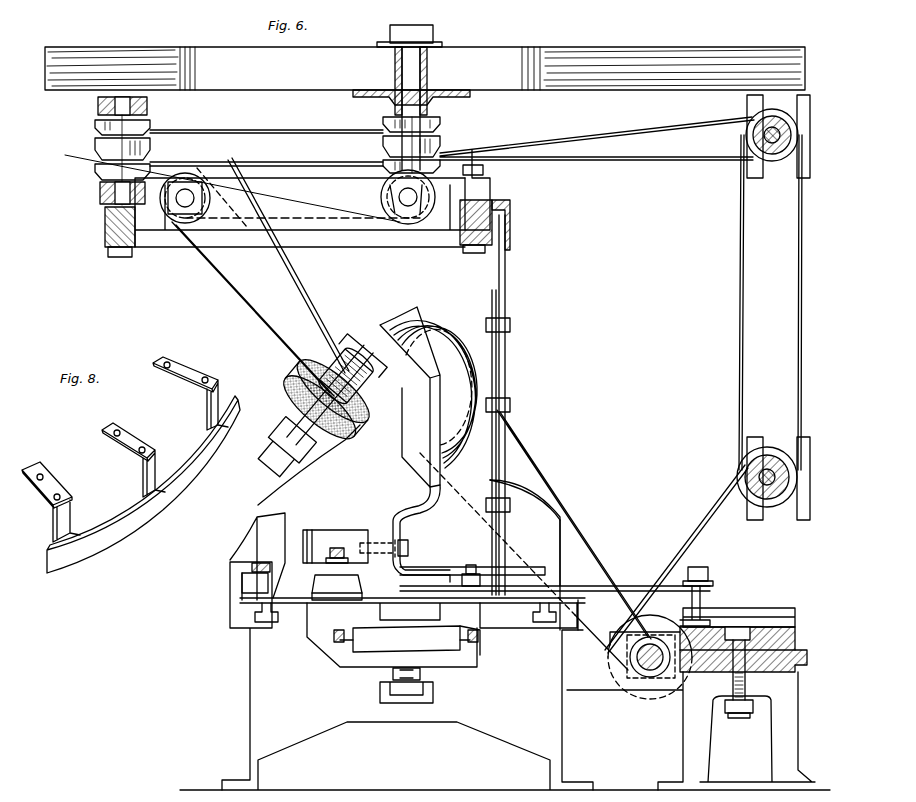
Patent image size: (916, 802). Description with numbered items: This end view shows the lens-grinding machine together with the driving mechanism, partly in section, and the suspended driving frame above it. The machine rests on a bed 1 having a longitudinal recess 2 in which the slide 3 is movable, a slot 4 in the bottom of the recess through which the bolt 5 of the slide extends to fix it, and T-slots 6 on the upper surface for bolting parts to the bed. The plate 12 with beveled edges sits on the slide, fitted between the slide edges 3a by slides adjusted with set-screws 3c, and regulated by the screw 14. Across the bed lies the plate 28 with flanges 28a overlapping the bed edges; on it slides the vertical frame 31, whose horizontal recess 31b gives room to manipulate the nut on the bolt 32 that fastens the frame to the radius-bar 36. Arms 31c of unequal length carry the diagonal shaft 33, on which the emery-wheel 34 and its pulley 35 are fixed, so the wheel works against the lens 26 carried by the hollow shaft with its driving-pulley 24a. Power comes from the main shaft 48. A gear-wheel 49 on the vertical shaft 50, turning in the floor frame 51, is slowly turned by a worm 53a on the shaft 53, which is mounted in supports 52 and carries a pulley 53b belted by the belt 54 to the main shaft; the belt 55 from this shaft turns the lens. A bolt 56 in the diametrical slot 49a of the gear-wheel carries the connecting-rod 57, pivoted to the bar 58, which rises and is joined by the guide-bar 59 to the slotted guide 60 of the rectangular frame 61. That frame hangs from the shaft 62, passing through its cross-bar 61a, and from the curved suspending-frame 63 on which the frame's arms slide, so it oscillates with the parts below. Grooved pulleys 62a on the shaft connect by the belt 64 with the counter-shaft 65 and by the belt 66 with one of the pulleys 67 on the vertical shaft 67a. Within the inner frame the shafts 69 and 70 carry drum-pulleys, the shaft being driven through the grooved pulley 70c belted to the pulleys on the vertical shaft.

In FIG. 6, the bed 1 is at (505, 713).
In FIG. 6, the longitudinal recess 2 is at (330, 645).
In FIG. 6, the slide 3 is at (473, 640).
In FIG. 6, the clamp jaw 3a is at (405, 639).
In FIG. 6, the set-screws 3c is at (343, 630).
In FIG. 6, the slot 4 is at (420, 674).
In FIG. 6, the bolt 5 is at (403, 700).
In FIG. 6, the T-slot 6 is at (265, 622).
In FIG. 6, the plate 12 is at (406, 639).
In FIG. 6, the screw 14 is at (412, 609).
In FIG. 6, the driving-pulley 24a is at (470, 366).
In FIG. 6, the lens 26 is at (448, 350).
In FIG. 6, the plate 28 is at (530, 600).
In FIG. 6, the flanges 28a is at (230, 612).
In FIG. 6, the vertical frame 31 is at (349, 583).
In FIG. 6, the horizontal recess 31b is at (320, 530).
In FIG. 6, the arms 31c is at (370, 397).
In FIG. 6, the bolt 32 is at (367, 548).
In FIG. 6, the shaft 33 is at (289, 455).
In FIG. 6, the emery-wheel 34 is at (318, 392).
In FIG. 6, the pulley 35 is at (333, 380).
In FIG. 6, the radius-bar 36 is at (343, 600).
In FIG. 6, the main shaft 48 is at (745, 470).
In FIG. 6, the gear-wheel 49 is at (800, 630).
In FIG. 6, the diametrical slot 49a is at (748, 618).
In FIG. 6, the vertical shaft 50 is at (747, 682).
In FIG. 6, the frame 51 is at (757, 727).
In FIG. 6, the supports 52 is at (622, 710).
In FIG. 6, the shaft 53 is at (640, 668).
In FIG. 6, the worm 53a is at (652, 680).
In FIG. 6, the pulley 53b is at (610, 665).
In FIG. 6, the belt 54 is at (690, 532).
In FIG. 6, the belt 55 is at (585, 535).
In FIG. 6, the bolt 56 is at (700, 567).
In FIG. 6, the connecting-rod 57 is at (630, 575).
In FIG. 6, the bar 58 is at (492, 483).
In FIG. 6, the guide-bar 59 is at (505, 285).
In FIG. 6, the slotted guide 60 is at (510, 215).
In FIG. 6, the rectangular frame 61 is at (466, 245).
In FIG. 6, the cross-bar 61a is at (343, 190).
In FIG. 6, the shaft 62 is at (398, 106).
In FIG. 6, the grooved pulleys 62a is at (432, 127).
In FIG. 8, the curved suspending-frame 63 is at (150, 525).
In FIG. 6, the belt 64 is at (645, 158).
In FIG. 6, the counter-shaft 65 is at (750, 160).
In FIG. 6, the belt 66 is at (232, 168).
In FIG. 6, the pulleys 67 is at (98, 140).
In FIG. 6, the vertical shaft 67a is at (147, 106).
In FIG. 6, the shaft 69 is at (185, 200).
In FIG. 6, the shaft 70 is at (405, 210).
In FIG. 6, the grooved pulley 70c is at (420, 212).